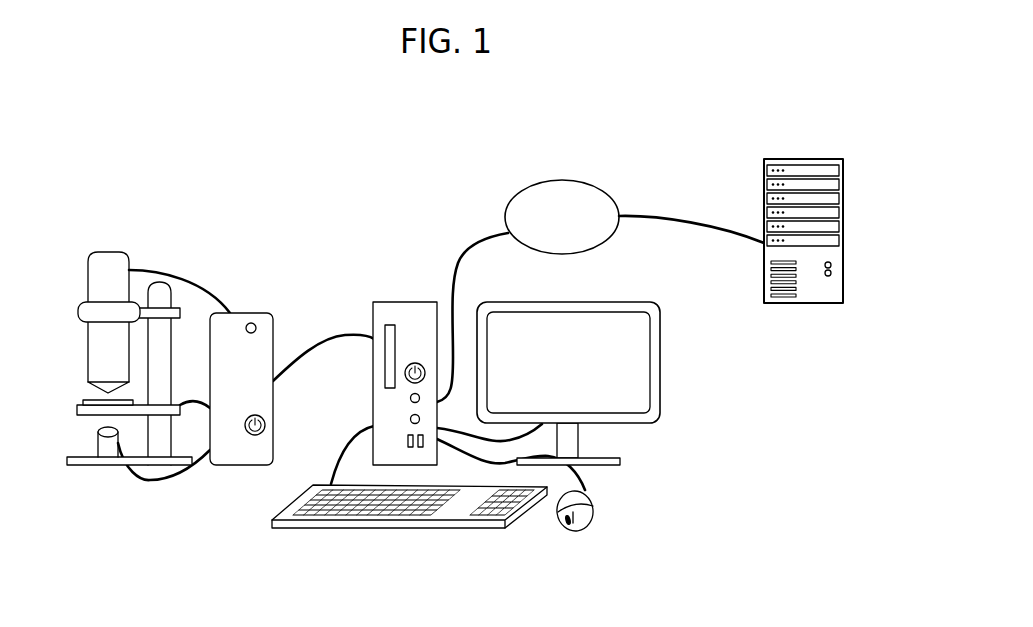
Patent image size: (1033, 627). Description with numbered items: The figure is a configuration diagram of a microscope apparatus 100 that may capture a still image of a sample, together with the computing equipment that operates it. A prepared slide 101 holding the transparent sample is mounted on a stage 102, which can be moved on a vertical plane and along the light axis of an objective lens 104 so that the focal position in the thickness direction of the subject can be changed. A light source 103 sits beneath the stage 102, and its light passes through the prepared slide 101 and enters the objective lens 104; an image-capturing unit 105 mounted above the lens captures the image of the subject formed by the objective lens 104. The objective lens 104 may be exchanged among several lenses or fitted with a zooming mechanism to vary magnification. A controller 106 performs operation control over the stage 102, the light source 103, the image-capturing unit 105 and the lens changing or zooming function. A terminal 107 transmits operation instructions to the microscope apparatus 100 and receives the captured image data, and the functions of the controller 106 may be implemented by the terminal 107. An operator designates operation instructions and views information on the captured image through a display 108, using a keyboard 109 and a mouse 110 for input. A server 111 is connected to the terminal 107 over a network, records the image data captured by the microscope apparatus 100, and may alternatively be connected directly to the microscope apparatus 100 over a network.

The microscope apparatus 100 is at (67, 537).
The prepared slide 101 is at (88, 399).
The stage 102 is at (85, 416).
The light source 103 is at (108, 447).
The objective lens 104 is at (87, 338).
The image-capturing unit 105 is at (108, 251).
The controller 106 is at (243, 310).
The terminal 107 is at (400, 302).
The display 108 is at (640, 353).
The keyboard 109 is at (455, 510).
The mouse 110 is at (587, 503).
The server 111 is at (800, 158).